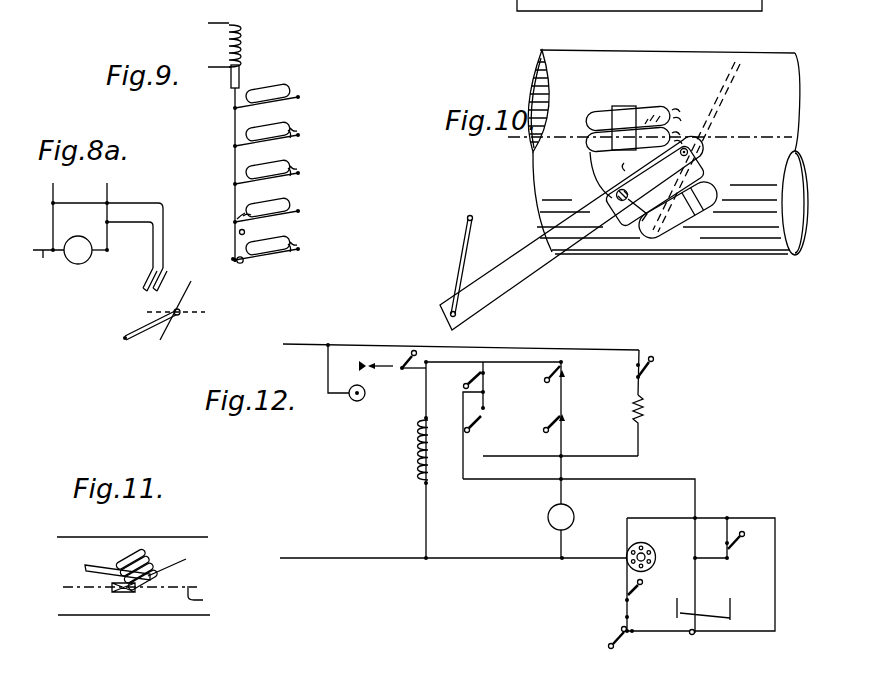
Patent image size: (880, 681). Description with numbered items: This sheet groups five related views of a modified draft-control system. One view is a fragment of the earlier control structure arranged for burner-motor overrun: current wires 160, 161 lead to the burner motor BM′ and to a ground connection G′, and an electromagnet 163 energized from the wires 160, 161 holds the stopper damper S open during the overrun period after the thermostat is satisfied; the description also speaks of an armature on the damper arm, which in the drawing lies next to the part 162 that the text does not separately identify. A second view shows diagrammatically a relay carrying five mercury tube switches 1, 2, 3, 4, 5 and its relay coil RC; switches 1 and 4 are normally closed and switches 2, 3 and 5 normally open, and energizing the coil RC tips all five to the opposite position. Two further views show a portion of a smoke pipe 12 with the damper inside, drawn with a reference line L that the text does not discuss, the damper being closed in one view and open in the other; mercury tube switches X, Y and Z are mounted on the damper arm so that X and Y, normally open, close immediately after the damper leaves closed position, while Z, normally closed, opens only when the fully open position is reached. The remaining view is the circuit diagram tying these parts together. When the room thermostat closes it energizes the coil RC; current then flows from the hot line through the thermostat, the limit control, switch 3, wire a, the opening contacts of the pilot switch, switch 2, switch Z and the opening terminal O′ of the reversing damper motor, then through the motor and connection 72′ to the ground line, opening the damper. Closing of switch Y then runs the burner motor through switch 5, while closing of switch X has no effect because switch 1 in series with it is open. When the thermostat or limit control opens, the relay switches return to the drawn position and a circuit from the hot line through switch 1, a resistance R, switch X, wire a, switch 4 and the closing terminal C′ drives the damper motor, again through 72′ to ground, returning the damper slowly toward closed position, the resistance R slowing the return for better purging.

In FIG. 9, the relay coil RC is at (247, 52).
In FIG. 12, the relay coil RC is at (418, 456).
In FIG. 9, the mercury tube switch 1 is at (288, 89).
In FIG. 12, the mercury tube switch 1 is at (648, 371).
In FIG. 9, the mercury tube switch 2 is at (288, 127).
In FIG. 12, the mercury tube switch 2 is at (622, 647).
In FIG. 9, the mercury tube switch 3 is at (288, 165).
In FIG. 12, the mercury tube switch 3 is at (468, 373).
In FIG. 9, the mercury tube switch 4 is at (288, 203).
In FIG. 12, the mercury tube switch 4 is at (728, 542).
In FIG. 9, the mercury tube switch 5 is at (288, 241).
In FIG. 12, the mercury tube switch 5 is at (550, 373).
In FIG. 8A, the current wire 160 is at (54, 233).
In FIG. 8A, the current wire 161 is at (108, 226).
In FIG. 8A, the switch lever 162 is at (140, 325).
In FIG. 8A, the electromagnet 163 is at (139, 279).
In FIG. 8A, the burner motor BM′ is at (80, 254).
In FIG. 8A, the ground connection G′ is at (48, 267).
In FIG. 8A, the stopper damper S is at (184, 298).
In FIG. 10, the control switch X is at (647, 108).
In FIG. 11, the control switch X is at (133, 546).
In FIG. 12, the control switch X is at (483, 421).
In FIG. 10, the control switch Y is at (589, 144).
In FIG. 11, the control switch Y is at (155, 555).
In FIG. 12, the control switch Y is at (556, 431).
In FIG. 10, the control switch Z is at (700, 196).
In FIG. 11, the control switch Z is at (125, 593).
In FIG. 12, the control switch Z is at (642, 588).
In FIG. 10, the axis line L is at (731, 141).
In FIG. 11, the axis line L is at (137, 576).
In FIG. 10, the drum 12 is at (740, 249).
In FIG. 12, the resistance R is at (645, 410).
In FIG. 12, the wire a is at (500, 479).
In FIG. 12, the closing terminal C′ is at (627, 547).
In FIG. 12, the motor connection 72′ is at (624, 560).
In FIG. 12, the opening terminal O′ is at (627, 567).